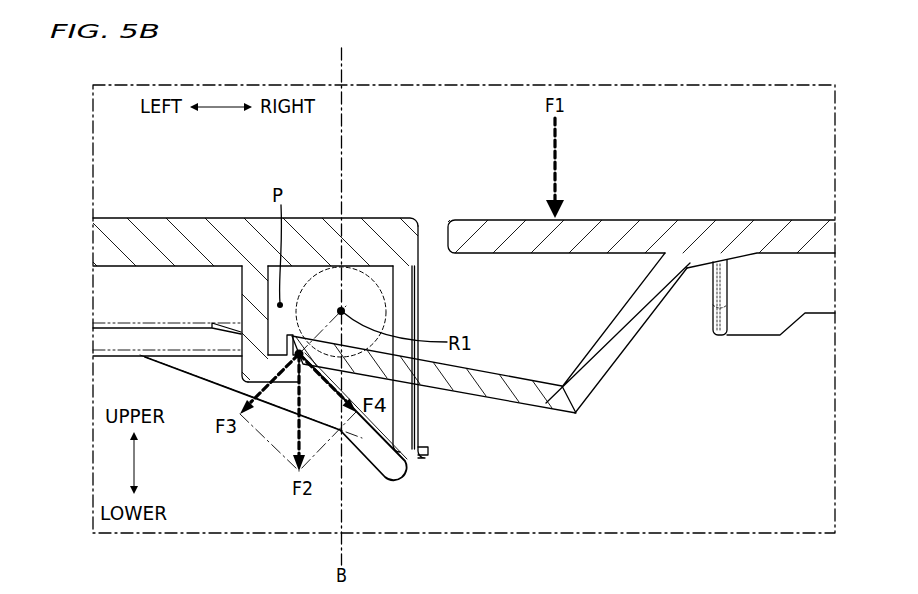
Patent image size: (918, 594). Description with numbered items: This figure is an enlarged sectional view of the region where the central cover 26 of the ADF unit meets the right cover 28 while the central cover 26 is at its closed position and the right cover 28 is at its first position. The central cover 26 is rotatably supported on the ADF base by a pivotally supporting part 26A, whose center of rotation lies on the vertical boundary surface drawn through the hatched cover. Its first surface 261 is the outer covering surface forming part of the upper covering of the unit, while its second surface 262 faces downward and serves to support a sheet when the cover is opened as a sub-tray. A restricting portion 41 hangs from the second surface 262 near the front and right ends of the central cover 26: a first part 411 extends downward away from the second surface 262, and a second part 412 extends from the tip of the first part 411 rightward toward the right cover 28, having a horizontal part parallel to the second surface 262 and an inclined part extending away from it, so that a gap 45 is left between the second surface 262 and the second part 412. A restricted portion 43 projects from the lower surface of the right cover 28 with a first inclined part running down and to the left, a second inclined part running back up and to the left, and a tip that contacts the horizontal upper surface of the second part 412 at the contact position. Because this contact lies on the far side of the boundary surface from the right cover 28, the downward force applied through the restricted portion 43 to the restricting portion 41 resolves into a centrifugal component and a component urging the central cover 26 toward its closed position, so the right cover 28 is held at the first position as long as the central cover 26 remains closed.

The central cover 26 is at (286, 305).
The first surface 261 is at (313, 217).
The second surface 262 is at (300, 287).
The pivotally supporting part 26A is at (368, 262).
The right cover 28 is at (738, 235).
The restricting portion 41 is at (250, 334).
The first part 411 is at (248, 289).
The second part 412 is at (282, 357).
The restricted portion 43 is at (505, 390).
The gap 45 is at (266, 277).